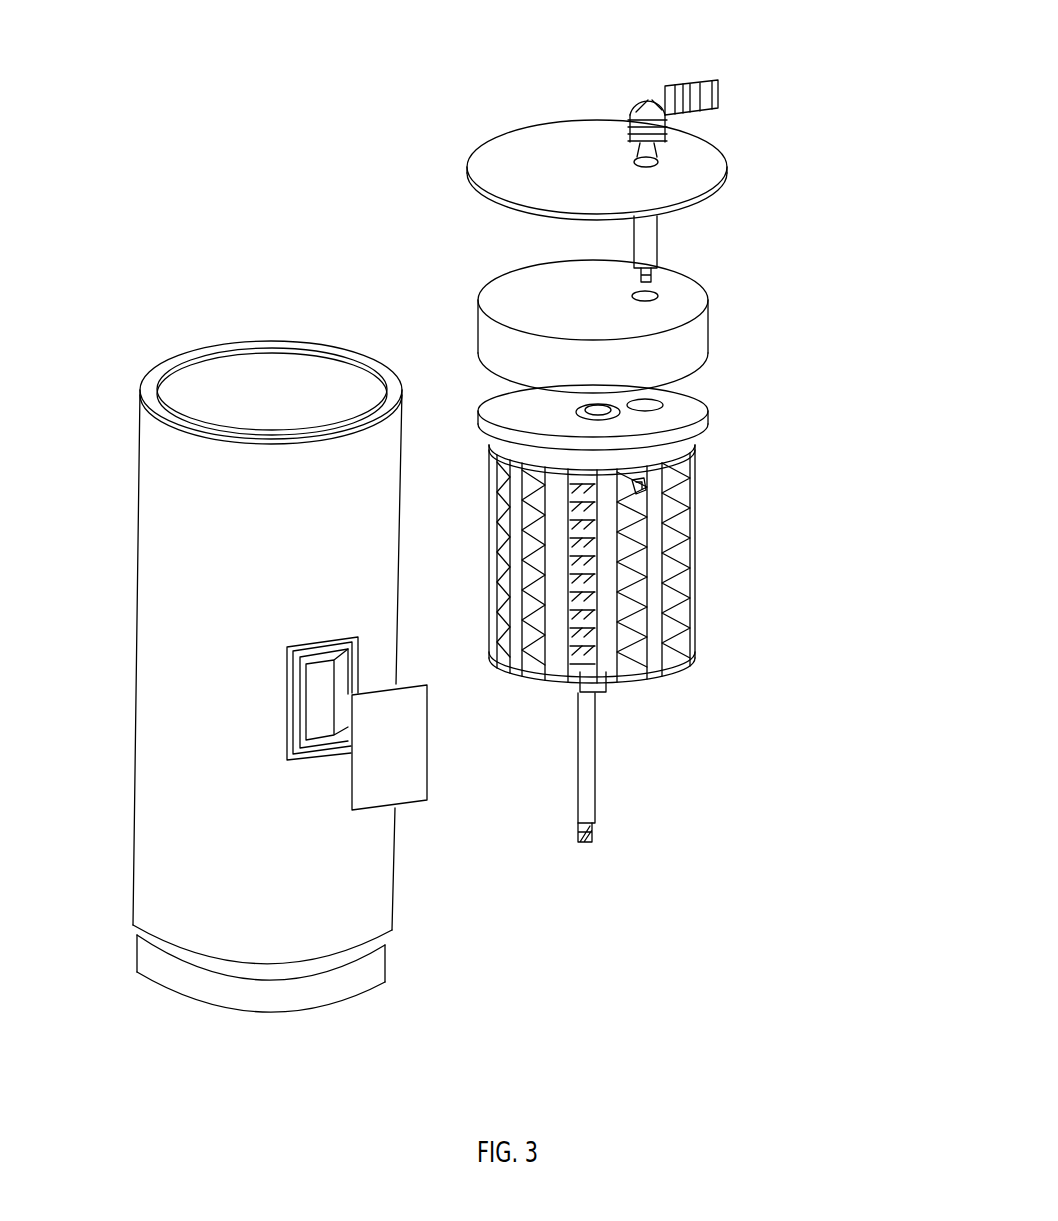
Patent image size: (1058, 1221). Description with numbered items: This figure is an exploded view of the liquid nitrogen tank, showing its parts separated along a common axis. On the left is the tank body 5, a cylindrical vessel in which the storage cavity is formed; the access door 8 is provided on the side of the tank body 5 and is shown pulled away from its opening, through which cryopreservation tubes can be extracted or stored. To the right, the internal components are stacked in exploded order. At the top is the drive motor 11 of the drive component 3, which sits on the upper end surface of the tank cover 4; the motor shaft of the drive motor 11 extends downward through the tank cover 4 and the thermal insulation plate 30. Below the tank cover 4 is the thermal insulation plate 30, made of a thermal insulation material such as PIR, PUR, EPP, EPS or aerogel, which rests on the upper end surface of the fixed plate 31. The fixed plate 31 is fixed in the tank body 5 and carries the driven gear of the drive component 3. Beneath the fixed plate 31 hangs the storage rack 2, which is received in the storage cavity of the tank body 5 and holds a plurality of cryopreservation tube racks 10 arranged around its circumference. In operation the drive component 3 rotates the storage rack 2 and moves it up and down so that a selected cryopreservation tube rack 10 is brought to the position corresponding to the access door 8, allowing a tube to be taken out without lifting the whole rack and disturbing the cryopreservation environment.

The storage rack 2 is at (712, 490).
The drive component 3 is at (722, 110).
The tank cover 4 is at (718, 172).
The tank body 5 is at (183, 353).
The access door 8 is at (392, 733).
The cryopreservation tube rack 10 is at (640, 492).
The drive motor 11 is at (650, 92).
The thermal insulation plate 30 is at (700, 346).
The fixed plate 31 is at (703, 418).